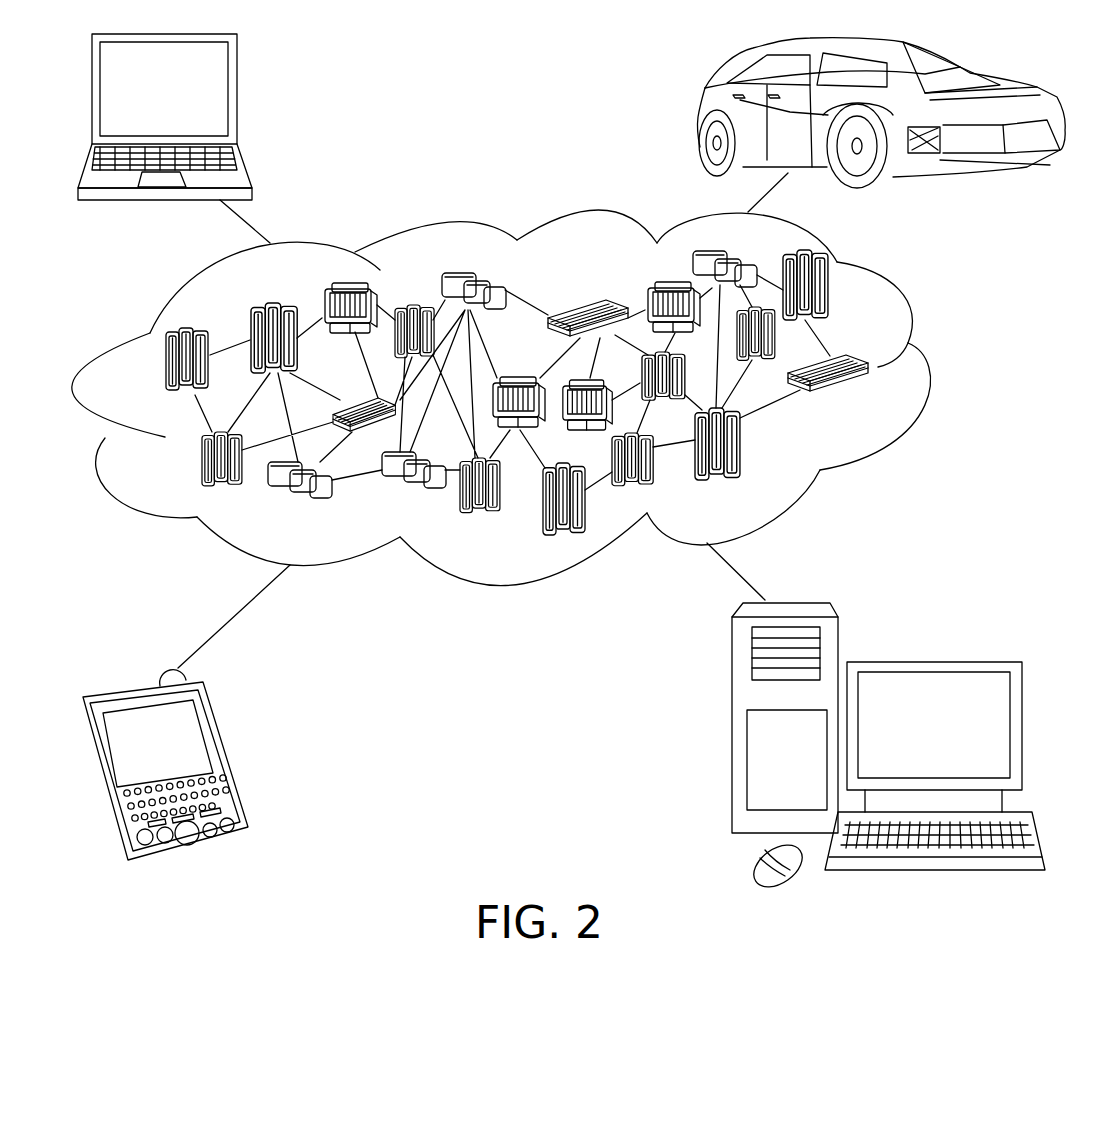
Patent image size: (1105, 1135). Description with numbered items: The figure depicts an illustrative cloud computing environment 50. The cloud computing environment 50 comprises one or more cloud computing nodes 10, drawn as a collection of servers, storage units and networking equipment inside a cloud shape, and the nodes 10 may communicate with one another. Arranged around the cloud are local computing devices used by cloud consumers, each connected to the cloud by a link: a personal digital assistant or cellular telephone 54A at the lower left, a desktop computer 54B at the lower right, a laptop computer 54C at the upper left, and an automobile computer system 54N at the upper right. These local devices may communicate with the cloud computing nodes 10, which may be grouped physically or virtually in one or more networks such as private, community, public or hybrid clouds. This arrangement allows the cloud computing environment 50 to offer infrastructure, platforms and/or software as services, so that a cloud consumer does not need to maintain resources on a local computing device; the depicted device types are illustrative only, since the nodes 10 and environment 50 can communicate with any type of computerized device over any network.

The cloud computing node 10 is at (870, 402).
The cloud computing environment 50 is at (932, 375).
The personal digital assistant or cellular telephone 54A is at (227, 755).
The desktop computer 54B is at (930, 662).
The laptop computer 54C is at (237, 96).
The automobile computer system 54N is at (700, 108).